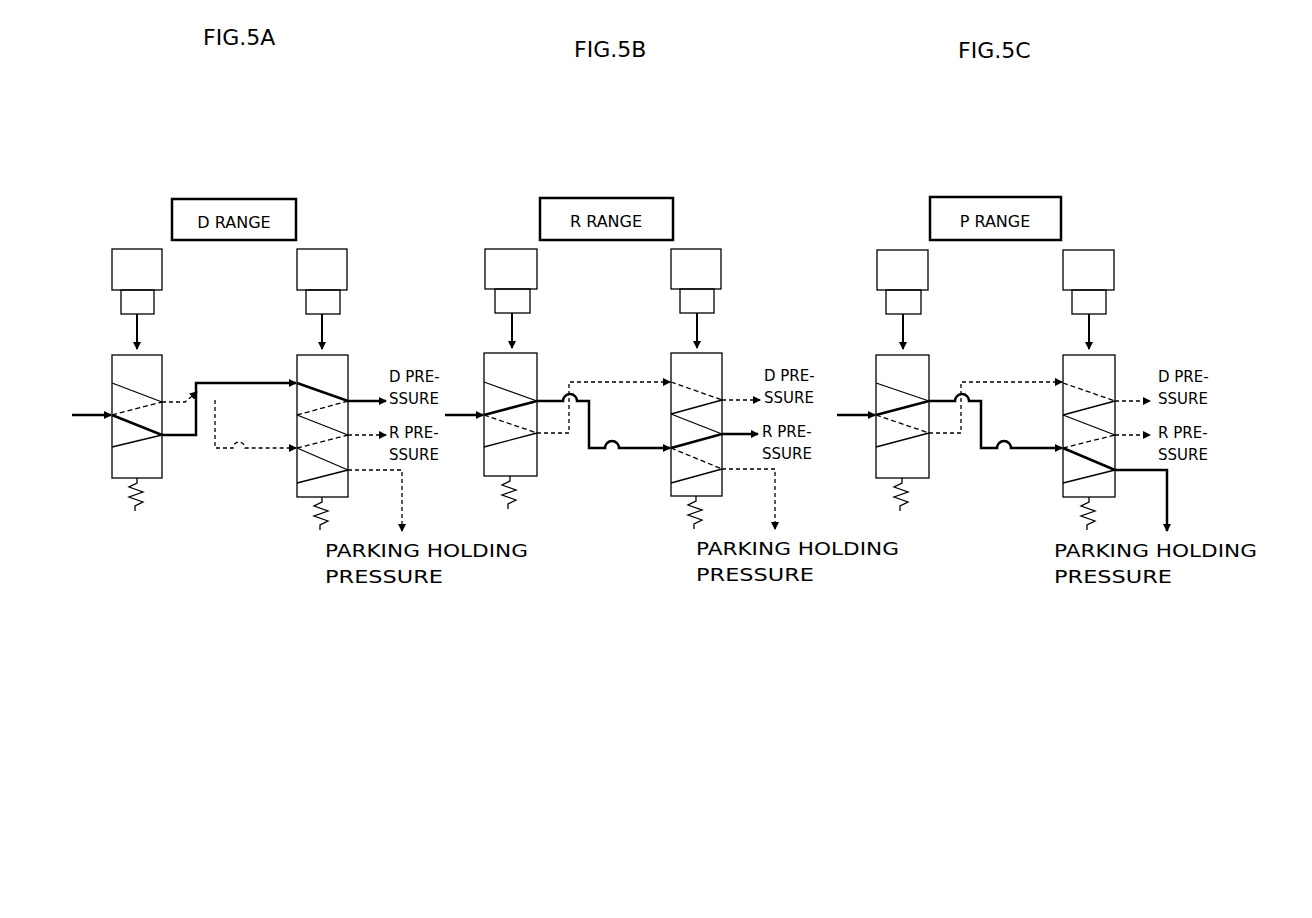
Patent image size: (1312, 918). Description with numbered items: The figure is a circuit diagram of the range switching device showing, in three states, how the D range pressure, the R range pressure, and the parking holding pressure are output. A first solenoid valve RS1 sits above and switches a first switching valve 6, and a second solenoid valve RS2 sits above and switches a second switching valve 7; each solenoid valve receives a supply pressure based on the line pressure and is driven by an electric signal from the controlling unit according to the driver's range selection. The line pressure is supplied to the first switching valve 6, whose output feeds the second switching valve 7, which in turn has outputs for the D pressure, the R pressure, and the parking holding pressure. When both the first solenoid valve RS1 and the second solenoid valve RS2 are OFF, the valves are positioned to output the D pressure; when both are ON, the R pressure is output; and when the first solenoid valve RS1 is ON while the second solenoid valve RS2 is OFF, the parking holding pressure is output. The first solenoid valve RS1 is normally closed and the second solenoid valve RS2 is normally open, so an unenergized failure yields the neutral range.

In FIG. 5A, the first switching valve 6 is at (112, 352).
In FIG. 5B, the first switching valve 6 is at (483, 352).
In FIG. 5C, the first switching valve 6 is at (875, 352).
In FIG. 5A, the second switching valve 7 is at (297, 352).
In FIG. 5B, the second switching valve 7 is at (670, 352).
In FIG. 5C, the second switching valve 7 is at (1062, 352).
In FIG. 5A, the first solenoid valve RS1 is at (139, 249).
In FIG. 5B, the first solenoid valve RS1 is at (510, 249).
In FIG. 5C, the first solenoid valve RS1 is at (903, 250).
In FIG. 5A, the second solenoid valve RS2 is at (322, 249).
In FIG. 5B, the second solenoid valve RS2 is at (694, 249).
In FIG. 5C, the second solenoid valve RS2 is at (1087, 250).